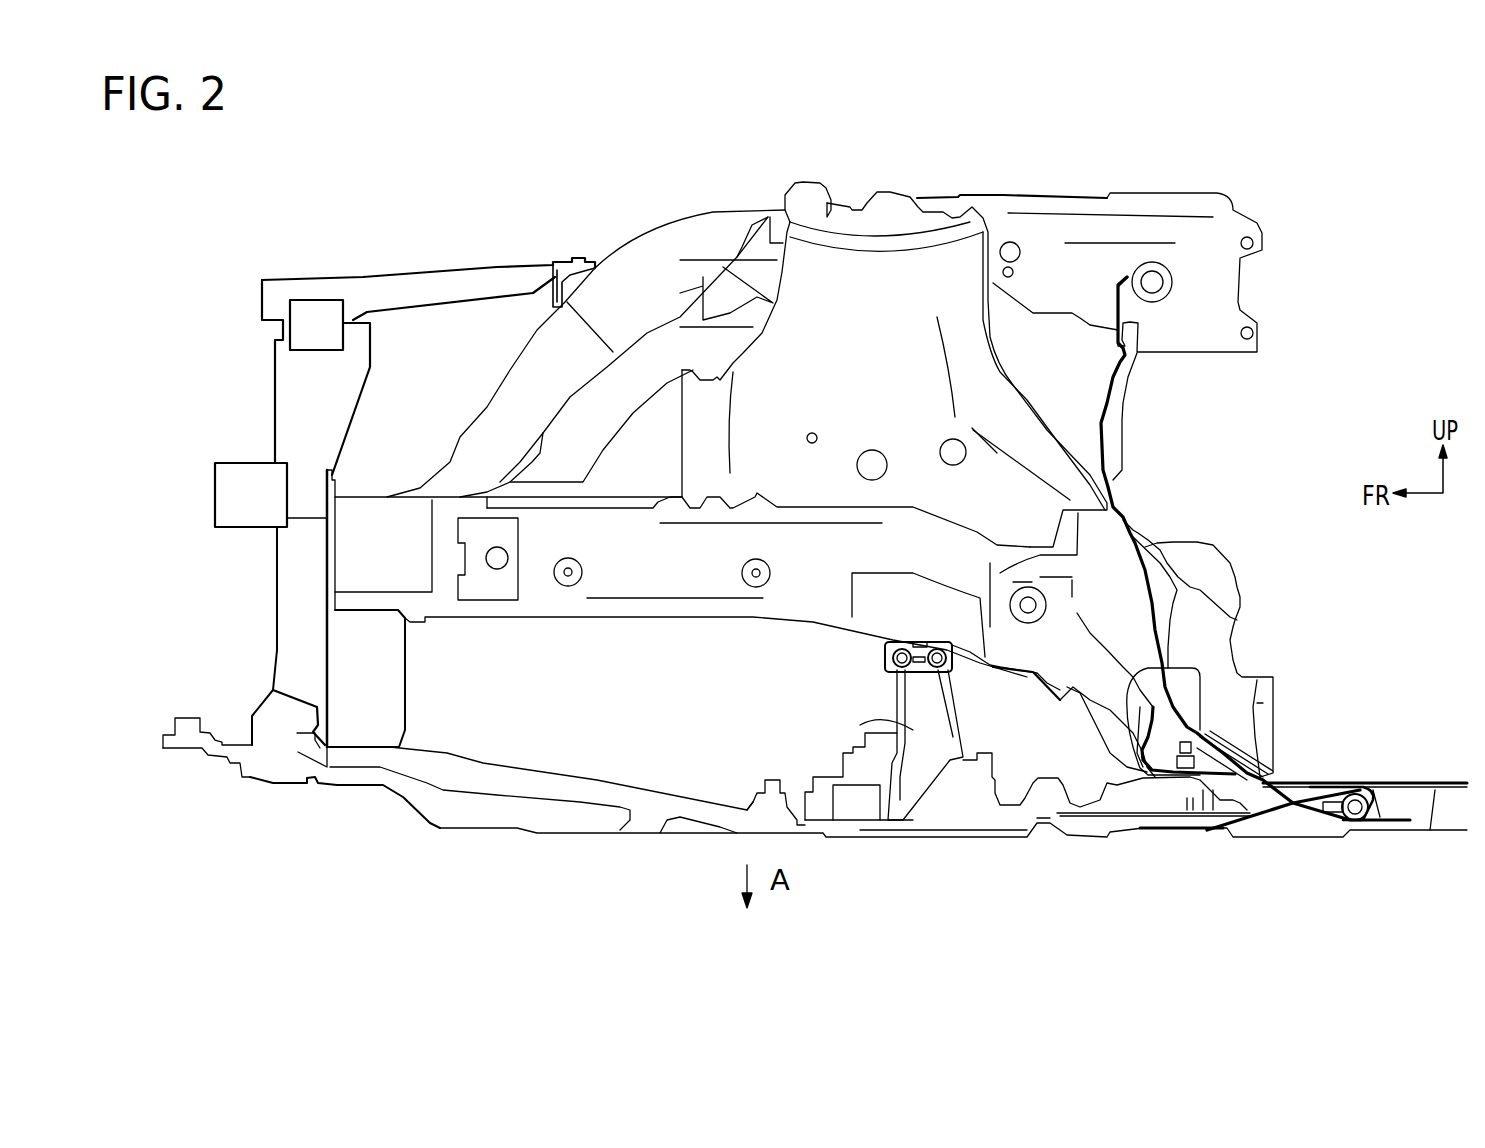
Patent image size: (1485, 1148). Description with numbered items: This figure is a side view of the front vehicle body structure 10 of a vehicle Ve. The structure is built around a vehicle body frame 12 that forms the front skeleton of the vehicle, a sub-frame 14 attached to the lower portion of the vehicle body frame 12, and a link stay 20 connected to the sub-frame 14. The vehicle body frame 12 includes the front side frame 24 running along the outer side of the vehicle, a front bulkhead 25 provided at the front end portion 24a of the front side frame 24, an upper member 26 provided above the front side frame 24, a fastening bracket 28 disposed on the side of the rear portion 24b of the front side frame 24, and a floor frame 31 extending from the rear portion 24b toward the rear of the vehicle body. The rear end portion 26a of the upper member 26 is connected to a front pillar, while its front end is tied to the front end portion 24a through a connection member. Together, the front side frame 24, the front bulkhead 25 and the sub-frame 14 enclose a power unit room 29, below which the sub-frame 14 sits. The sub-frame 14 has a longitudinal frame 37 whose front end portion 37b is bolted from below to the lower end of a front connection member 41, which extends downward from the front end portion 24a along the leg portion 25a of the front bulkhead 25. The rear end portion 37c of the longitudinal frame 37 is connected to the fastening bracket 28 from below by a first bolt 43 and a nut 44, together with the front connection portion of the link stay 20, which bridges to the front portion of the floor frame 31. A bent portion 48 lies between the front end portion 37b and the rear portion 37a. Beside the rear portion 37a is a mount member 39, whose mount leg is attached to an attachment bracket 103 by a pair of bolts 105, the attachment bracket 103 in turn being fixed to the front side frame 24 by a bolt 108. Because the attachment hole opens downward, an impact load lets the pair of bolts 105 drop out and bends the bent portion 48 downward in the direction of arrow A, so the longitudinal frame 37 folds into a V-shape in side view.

The vehicle Ve is at (523, 168).
The front vehicle body structure 10 is at (462, 242).
The vehicle body frame 12 is at (688, 214).
The sub-frame 14 is at (573, 770).
The link stay 20 is at (1290, 827).
The front side frame 24 is at (697, 590).
The front end portion of front side frame 24a is at (343, 558).
The rear portion of front side frame 24b is at (1110, 712).
The front bulkhead 25 is at (274, 415).
The leg portion of front bulkhead 25a is at (277, 628).
The upper member 26 is at (495, 393).
The rear end portion of upper member 26a is at (1183, 198).
The fastening bracket 28 is at (1203, 738).
The power unit room 29 is at (536, 688).
The floor frame 31 is at (1420, 812).
The longitudinal frame 37 is at (567, 833).
The rear portion of longitudinal frame 37a is at (1052, 797).
The front end portion of longitudinal frame 37b is at (353, 783).
The rear end portion of longitudinal frame 37c is at (1177, 797).
The mount member 39 is at (913, 720).
The front connection member 41 is at (393, 677).
The first bolt 43 is at (1193, 745).
The nut 44 is at (1210, 752).
The bent portion 48 is at (740, 820).
The attachment bracket 103 is at (885, 648).
The bolt 105 is at (902, 650).
The bolt 108 is at (918, 640).